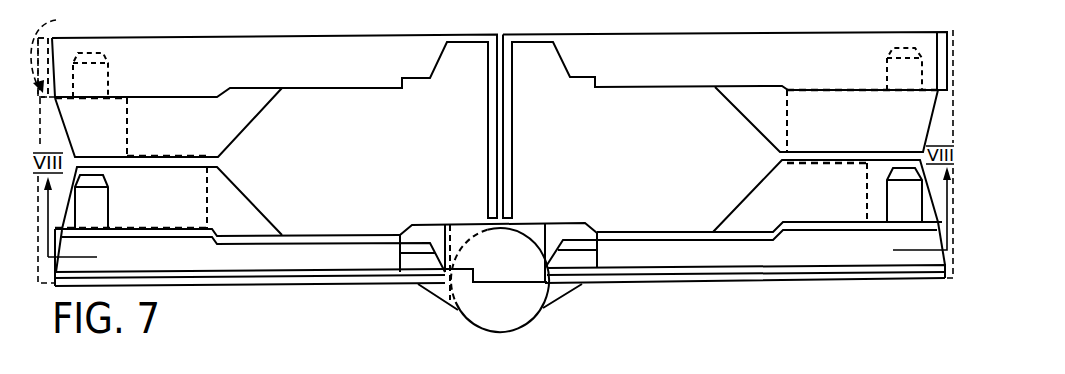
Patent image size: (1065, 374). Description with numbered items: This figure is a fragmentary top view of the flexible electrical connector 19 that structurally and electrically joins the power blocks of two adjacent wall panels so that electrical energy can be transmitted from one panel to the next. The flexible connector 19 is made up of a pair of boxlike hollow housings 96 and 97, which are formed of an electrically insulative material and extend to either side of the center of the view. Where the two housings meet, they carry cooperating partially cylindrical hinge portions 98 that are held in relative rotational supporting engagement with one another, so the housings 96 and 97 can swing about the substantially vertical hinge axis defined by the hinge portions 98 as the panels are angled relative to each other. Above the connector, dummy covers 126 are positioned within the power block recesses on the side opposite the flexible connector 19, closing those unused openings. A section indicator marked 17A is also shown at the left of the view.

The section line / connection indicator 17A is at (65, 51).
The dummy cover 126 is at (280, 37).
The boxlike hollow housing 97 is at (318, 257).
The boxlike hollow housing 96 is at (645, 247).
The partially cylindrical hinge portion 98 is at (512, 310).
The flexible electrical connector 19 is at (753, 283).